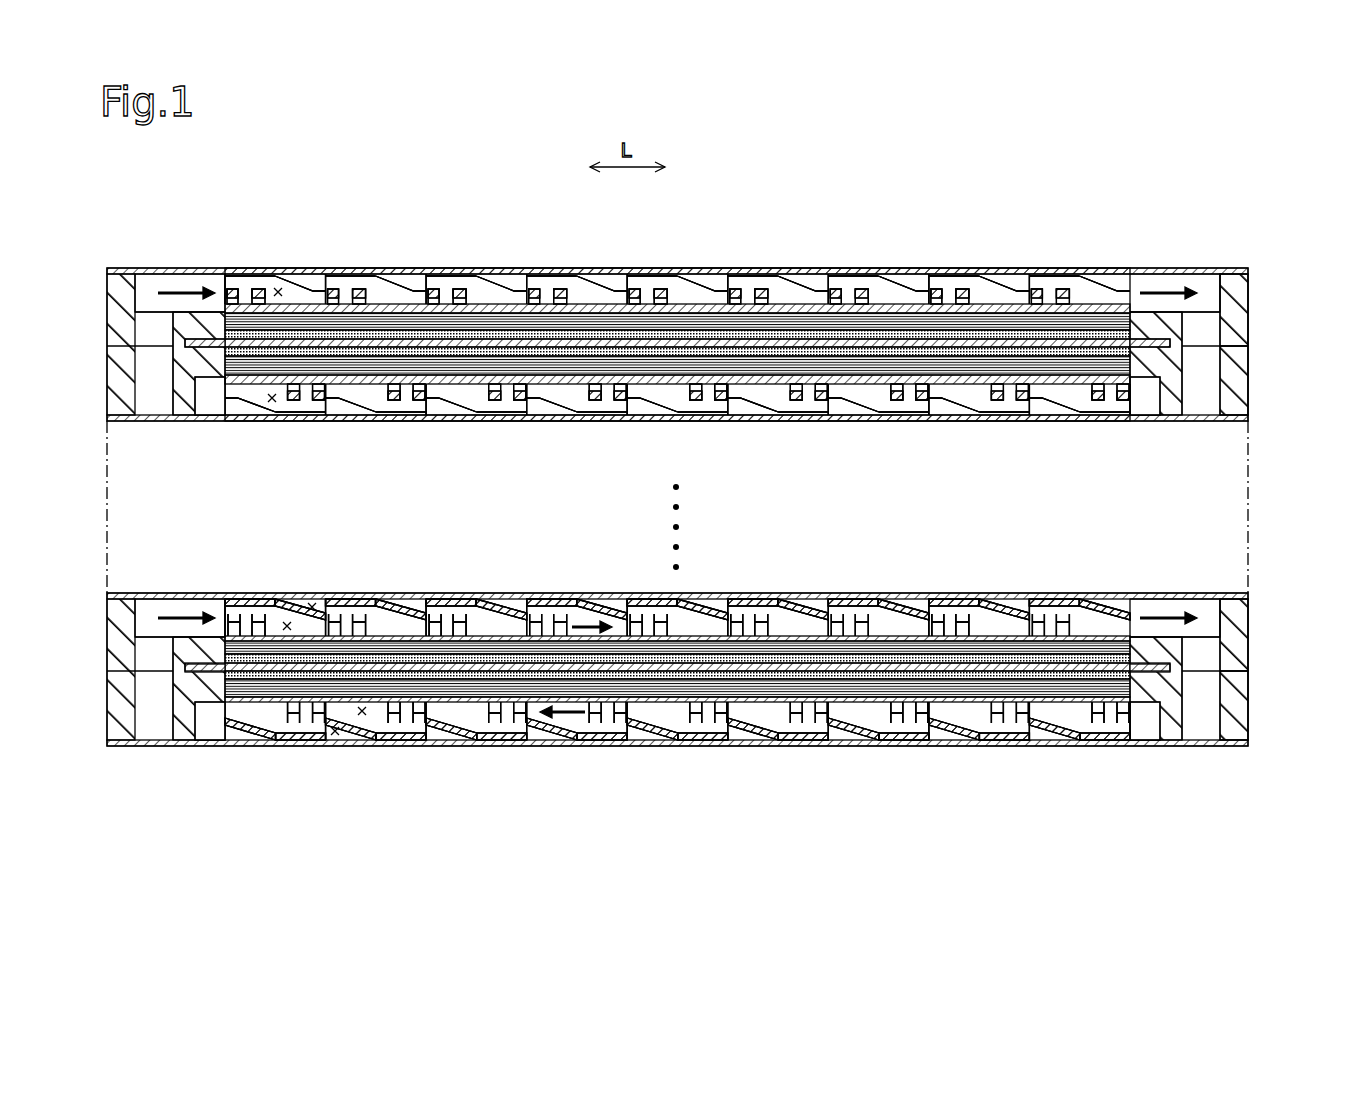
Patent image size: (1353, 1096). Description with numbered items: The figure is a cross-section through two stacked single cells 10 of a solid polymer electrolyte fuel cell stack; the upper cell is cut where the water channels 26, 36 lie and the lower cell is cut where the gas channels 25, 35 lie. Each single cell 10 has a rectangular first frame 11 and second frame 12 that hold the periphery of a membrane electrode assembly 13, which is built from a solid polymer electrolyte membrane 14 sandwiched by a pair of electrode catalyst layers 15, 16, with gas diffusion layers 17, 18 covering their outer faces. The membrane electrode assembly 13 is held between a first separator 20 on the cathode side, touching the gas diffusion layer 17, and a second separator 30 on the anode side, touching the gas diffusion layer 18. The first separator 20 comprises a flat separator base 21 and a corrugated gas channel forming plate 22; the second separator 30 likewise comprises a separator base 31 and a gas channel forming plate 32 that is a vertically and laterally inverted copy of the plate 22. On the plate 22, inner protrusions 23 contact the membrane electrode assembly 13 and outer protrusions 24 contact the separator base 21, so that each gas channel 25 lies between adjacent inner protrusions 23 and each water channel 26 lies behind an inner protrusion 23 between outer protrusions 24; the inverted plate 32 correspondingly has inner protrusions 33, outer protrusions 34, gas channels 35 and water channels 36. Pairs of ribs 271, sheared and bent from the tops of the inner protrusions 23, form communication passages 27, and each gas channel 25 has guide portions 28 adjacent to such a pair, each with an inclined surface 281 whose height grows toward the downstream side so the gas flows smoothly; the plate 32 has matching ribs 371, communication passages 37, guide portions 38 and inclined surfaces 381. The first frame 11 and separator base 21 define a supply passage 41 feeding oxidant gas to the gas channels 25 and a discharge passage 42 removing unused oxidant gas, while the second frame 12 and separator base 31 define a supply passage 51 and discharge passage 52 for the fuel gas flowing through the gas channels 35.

The single cell 10 is at (718, 504).
The first frame 11 is at (1251, 539).
The second frame 12 is at (1251, 472).
The membrane electrode assembly 13 is at (677, 490).
The solid polymer electrolyte membrane 14 is at (878, 344).
The electrode catalyst layer 15 is at (836, 334).
The electrode catalyst layer 16 is at (914, 352).
The gas diffusion layer 17 is at (783, 370).
The gas diffusion layer 18 is at (944, 320).
The first separator 20 is at (800, 478).
The separator base 21 is at (736, 421).
The gas channel forming plate 22 is at (776, 385).
The inner protrusion 23 is at (460, 384).
The outer protrusion 24 is at (575, 421).
The gas channel 25 is at (362, 716).
The water channel 26 is at (272, 401).
The communication passage 27 is at (317, 400).
The rib 271 is at (392, 400).
The guide portion 28 is at (241, 399).
The inclined surface 281 is at (252, 742).
The second separator 30 is at (735, 217).
The separator base 31 is at (700, 305).
The gas channel forming plate 32 is at (688, 299).
The inner protrusion 33 is at (488, 312).
The outer protrusion 34 is at (590, 275).
The gas channel 35 is at (290, 614).
The water channel 36 is at (278, 289).
The communication passage 37 is at (250, 289).
The rib 371 is at (331, 289).
The guide portion 38 is at (295, 286).
The inclined surface 381 is at (385, 607).
The supply passage 41 is at (1146, 398).
The discharge passage 42 is at (208, 398).
The supply passage 51 is at (151, 290).
The discharge passage 52 is at (1191, 290).